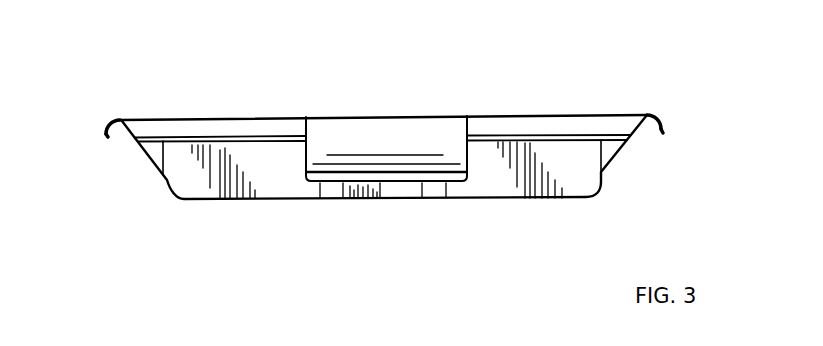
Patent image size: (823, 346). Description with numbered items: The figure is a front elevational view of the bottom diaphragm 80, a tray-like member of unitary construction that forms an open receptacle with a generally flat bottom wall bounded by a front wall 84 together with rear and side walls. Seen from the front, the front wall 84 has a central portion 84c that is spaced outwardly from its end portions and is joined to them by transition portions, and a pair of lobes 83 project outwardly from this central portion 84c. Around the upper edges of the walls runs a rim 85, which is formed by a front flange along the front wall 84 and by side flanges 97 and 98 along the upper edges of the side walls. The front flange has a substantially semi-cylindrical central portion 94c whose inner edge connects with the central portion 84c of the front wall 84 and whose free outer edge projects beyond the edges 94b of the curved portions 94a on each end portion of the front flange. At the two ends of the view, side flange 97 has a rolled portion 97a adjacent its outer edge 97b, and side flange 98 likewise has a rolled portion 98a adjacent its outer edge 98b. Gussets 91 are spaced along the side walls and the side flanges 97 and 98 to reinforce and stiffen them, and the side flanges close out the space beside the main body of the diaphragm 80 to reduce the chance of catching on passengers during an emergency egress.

The bottom diaphragm 80 is at (238, 204).
The lobes 83 is at (333, 191).
The front wall 84 is at (586, 175).
The central portion of front wall 84c is at (414, 188).
The rim 85 is at (590, 117).
The gussets 91 is at (157, 155).
The curved portions of front flange 94a is at (232, 122).
The edges of curved portions 94b is at (497, 118).
The central portion of front flange 94c is at (368, 138).
The side flange 97 is at (116, 121).
The rolled portion 97a is at (114, 121).
The outer edge 97b is at (108, 137).
The side flange 98 is at (703, 119).
The rolled portion 98a is at (662, 126).
The outer edge 98b is at (663, 134).